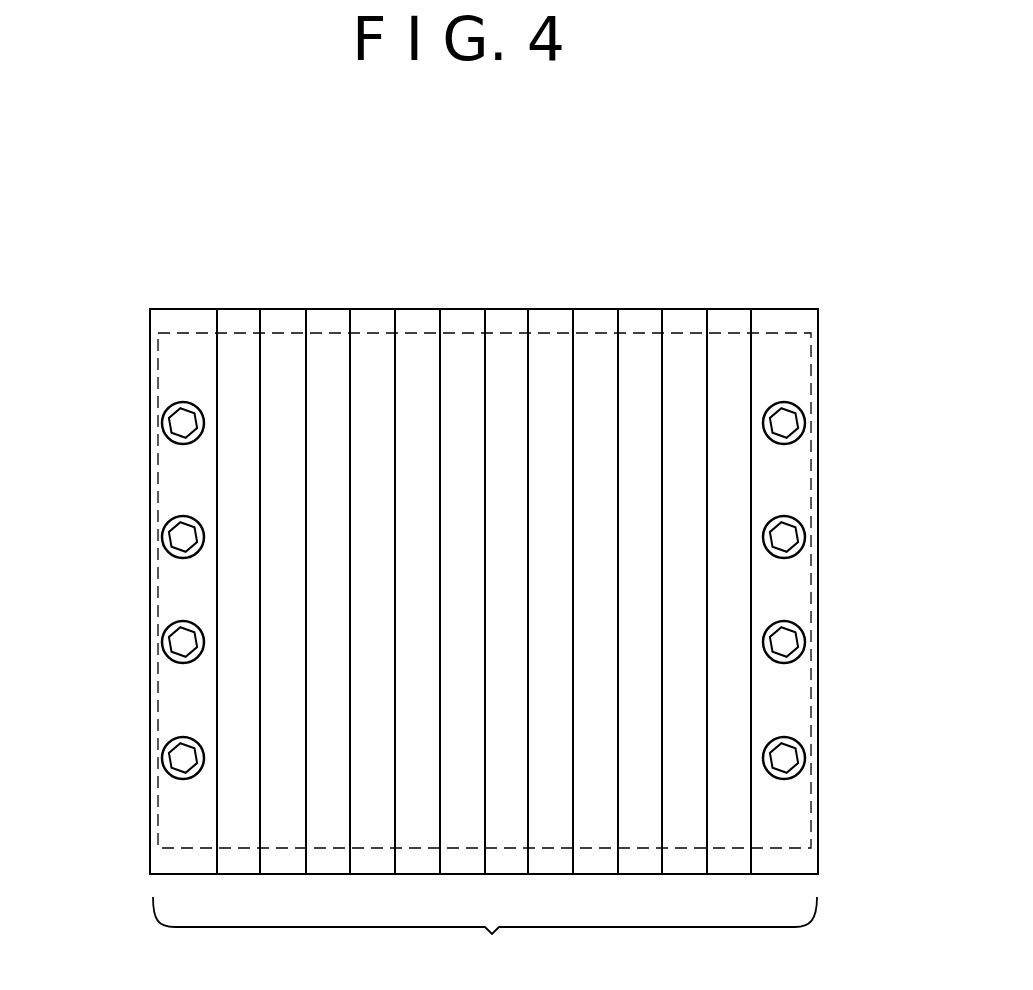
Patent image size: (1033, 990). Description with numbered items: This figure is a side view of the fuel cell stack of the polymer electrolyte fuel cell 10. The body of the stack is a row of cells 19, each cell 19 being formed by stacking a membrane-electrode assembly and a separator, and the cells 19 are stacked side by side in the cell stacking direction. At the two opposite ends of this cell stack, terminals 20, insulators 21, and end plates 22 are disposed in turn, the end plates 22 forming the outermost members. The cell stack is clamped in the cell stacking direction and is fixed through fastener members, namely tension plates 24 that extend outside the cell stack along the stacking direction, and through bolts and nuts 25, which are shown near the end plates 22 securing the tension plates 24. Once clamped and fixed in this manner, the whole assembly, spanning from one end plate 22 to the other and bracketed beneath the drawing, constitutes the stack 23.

The polymer electrolyte fuel cell 10 is at (820, 808).
The cell 19 is at (643, 325).
The terminal 20 is at (278, 323).
The insulator 21 is at (237, 320).
The end plate 22 is at (157, 323).
The stack 23 is at (485, 937).
The tension plate 24 is at (183, 333).
The bolts and nuts 25 is at (182, 423).